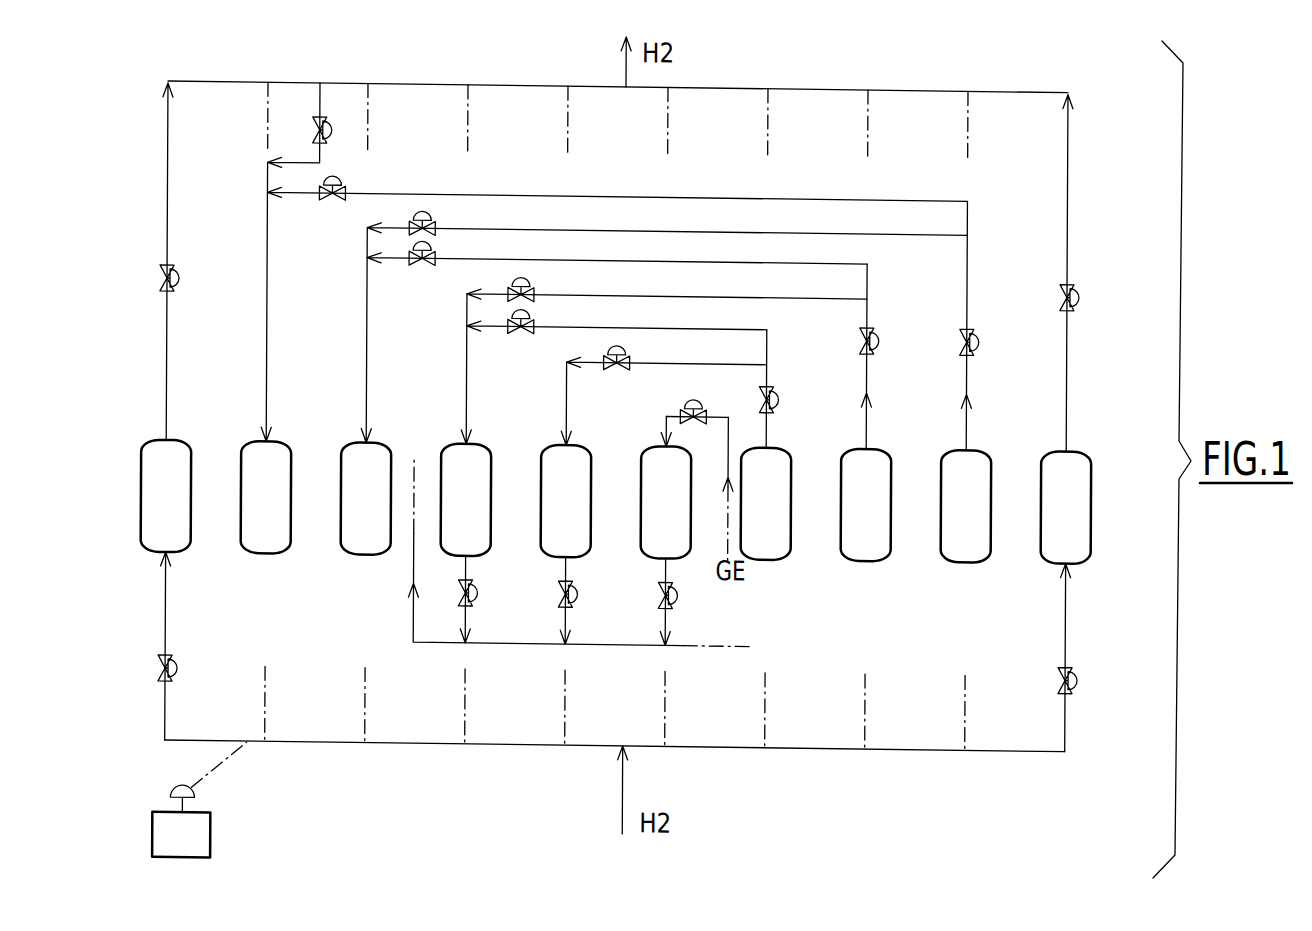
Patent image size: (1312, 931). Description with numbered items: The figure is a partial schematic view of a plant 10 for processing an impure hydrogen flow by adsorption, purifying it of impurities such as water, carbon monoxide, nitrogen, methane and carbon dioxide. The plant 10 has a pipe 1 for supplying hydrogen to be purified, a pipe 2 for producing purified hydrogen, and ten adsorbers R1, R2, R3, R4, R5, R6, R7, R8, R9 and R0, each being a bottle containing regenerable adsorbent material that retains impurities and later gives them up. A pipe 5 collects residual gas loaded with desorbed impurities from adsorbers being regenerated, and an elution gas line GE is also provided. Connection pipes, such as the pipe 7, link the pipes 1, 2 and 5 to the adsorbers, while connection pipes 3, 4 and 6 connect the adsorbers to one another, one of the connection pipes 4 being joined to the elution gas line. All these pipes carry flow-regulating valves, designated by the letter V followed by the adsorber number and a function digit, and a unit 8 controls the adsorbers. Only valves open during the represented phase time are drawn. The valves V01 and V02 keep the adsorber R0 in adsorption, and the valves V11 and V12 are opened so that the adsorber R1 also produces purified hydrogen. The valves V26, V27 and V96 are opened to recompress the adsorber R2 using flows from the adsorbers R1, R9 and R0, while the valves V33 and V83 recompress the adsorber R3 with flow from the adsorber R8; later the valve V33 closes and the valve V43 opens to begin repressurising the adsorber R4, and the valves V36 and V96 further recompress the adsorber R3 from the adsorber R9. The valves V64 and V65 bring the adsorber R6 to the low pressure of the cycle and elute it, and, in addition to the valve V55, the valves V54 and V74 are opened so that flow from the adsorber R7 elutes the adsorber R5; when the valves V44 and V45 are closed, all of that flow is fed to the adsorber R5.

The supply pipe 1 is at (511, 742).
The production pipe 2 is at (213, 81).
The connection pipe 3 is at (696, 290).
The connection pipe 4 is at (752, 322).
The residual gas collection pipe 5 is at (616, 640).
The connection pipe 6 is at (612, 225).
The connection pipe 7 is at (319, 102).
The control unit 8 is at (199, 799).
The plant 10 is at (130, 89).
The valve V01 is at (1083, 671).
The valve V02 is at (1083, 288).
The valve V11 is at (161, 668).
The valve V12 is at (161, 278).
The valve V26 is at (331, 198).
The valve V27 is at (336, 134).
The valve V33 is at (418, 262).
The valve V36 is at (426, 214).
The valve V43 is at (536, 290).
The valve V44 is at (518, 330).
The valve V45 is at (482, 594).
The valve V54 is at (628, 350).
The valve V55 is at (582, 593).
The valve V64 is at (683, 408).
The valve V65 is at (682, 592).
The valve V74 is at (783, 390).
The valve V83 is at (884, 330).
The valve V96 is at (984, 330).
The adsorber R1 is at (166, 496).
The adsorber R2 is at (266, 497).
The adsorber R3 is at (366, 498).
The adsorber R4 is at (466, 500).
The adsorber R5 is at (566, 501).
The adsorber R6 is at (666, 502).
The adsorber R7 is at (766, 503).
The adsorber R8 is at (866, 505).
The adsorber R9 is at (966, 506).
The adsorber R0 is at (1066, 507).